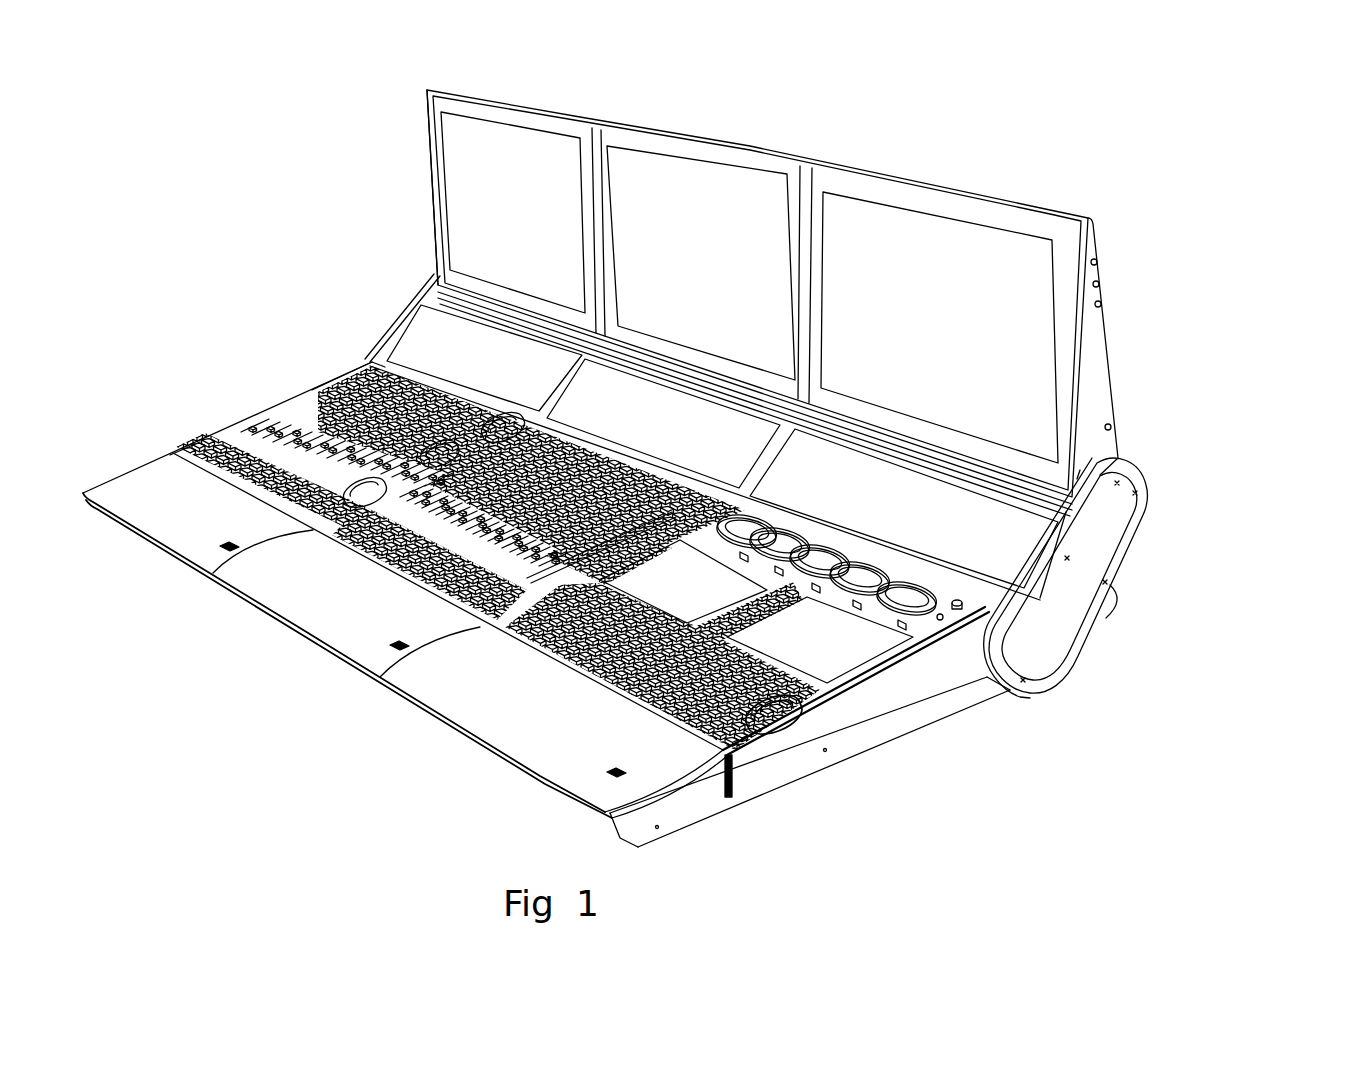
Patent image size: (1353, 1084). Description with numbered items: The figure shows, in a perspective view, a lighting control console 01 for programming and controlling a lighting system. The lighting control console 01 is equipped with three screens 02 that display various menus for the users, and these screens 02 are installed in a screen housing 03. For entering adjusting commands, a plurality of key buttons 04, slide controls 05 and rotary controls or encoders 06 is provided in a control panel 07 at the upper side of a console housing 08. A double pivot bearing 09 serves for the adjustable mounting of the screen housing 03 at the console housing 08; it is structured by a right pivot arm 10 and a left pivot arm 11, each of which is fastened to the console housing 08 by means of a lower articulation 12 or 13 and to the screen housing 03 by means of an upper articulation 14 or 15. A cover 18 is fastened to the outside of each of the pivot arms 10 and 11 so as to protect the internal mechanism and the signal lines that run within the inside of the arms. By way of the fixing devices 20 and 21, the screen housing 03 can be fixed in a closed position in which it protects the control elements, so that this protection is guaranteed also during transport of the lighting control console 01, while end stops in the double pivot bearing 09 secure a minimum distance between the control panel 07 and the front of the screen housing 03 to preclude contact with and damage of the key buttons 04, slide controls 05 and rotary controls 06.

The lighting control console 01 is at (258, 222).
The screens 02 is at (517, 150).
The screen housing 03 is at (1087, 347).
The key buttons 04 is at (207, 440).
The slide controls 05 is at (265, 412).
The rotary controls (encoders) 06 is at (915, 600).
The control panel 07 is at (444, 468).
The console housing 08 is at (865, 717).
The double pivot bearing 09 is at (408, 223).
The right pivot arm 10 is at (1102, 468).
The left pivot arm 11 is at (424, 322).
The lower articulation 12 is at (1040, 650).
The lower articulation 13 is at (357, 355).
The upper articulation 14 is at (1122, 498).
The upper articulation 15 is at (428, 259).
The cover 18 is at (1107, 557).
The fixing device 20 is at (733, 778).
The fixing device 21 is at (184, 435).